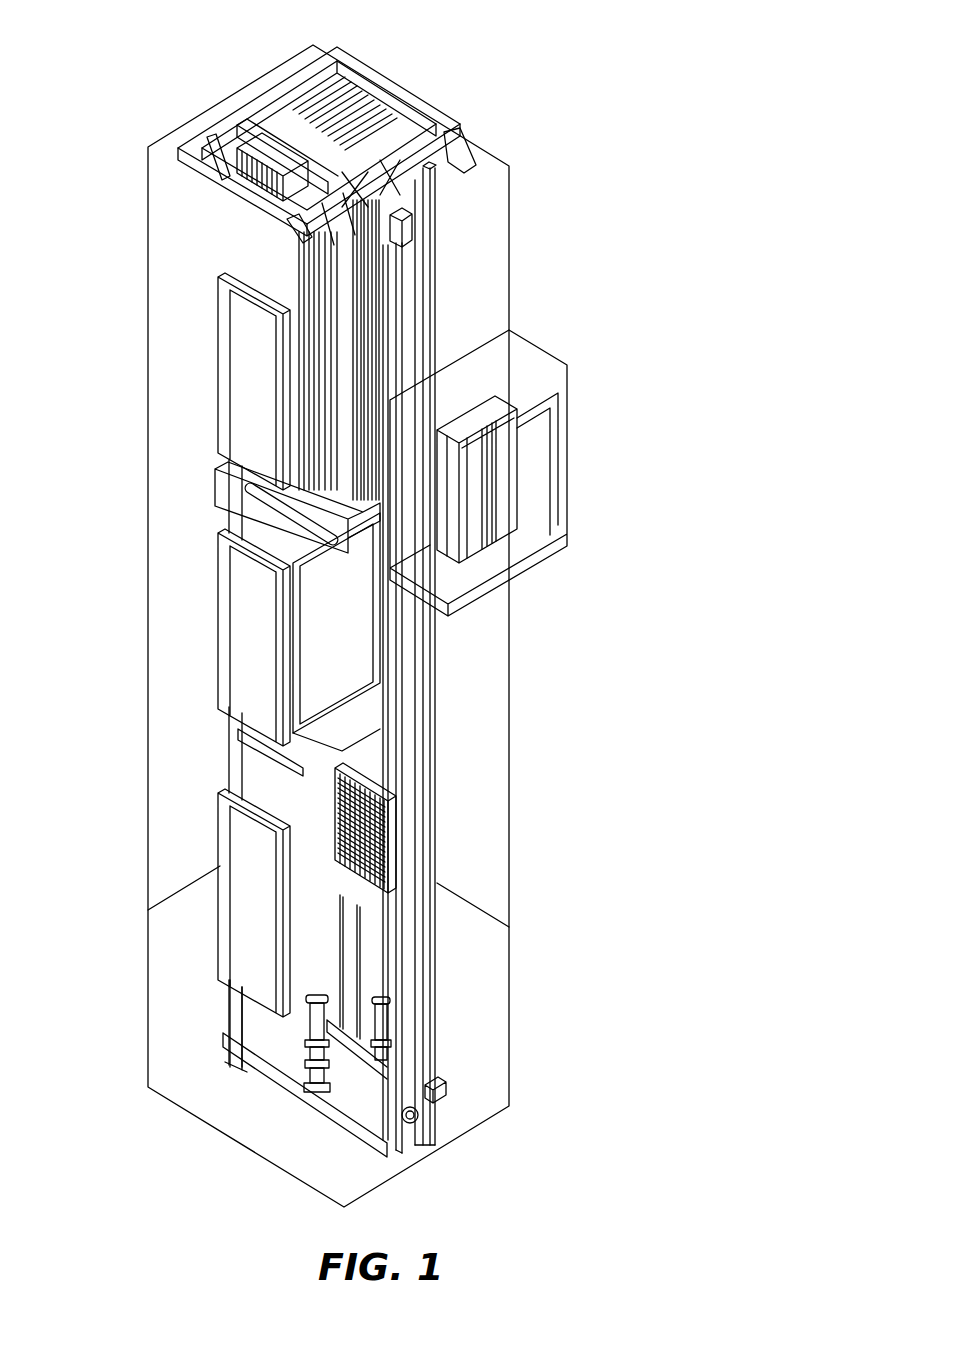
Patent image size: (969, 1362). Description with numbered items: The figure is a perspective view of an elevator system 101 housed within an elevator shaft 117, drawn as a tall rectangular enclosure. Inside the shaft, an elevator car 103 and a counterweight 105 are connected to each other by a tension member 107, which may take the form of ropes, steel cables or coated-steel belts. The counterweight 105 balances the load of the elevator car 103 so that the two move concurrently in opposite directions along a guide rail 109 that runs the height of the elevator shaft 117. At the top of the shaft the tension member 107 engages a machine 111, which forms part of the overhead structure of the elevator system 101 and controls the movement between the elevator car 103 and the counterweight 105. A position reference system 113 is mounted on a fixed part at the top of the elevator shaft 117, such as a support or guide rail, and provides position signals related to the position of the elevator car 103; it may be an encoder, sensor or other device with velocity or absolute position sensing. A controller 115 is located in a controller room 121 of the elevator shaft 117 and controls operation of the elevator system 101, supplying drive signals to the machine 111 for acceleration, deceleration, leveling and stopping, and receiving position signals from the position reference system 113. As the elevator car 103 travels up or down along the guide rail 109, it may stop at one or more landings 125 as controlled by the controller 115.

The elevator system 101 is at (572, 92).
The elevator car 103 is at (333, 673).
The counterweight 105 is at (387, 838).
The tension member 107 is at (335, 378).
The guide rail 109 is at (408, 765).
The machine 111 is at (250, 145).
The position reference system 113 is at (400, 228).
The controller 115 is at (511, 477).
The elevator shaft 117 is at (190, 766).
The controller room 121 is at (570, 360).
The landings 125 is at (218, 367).